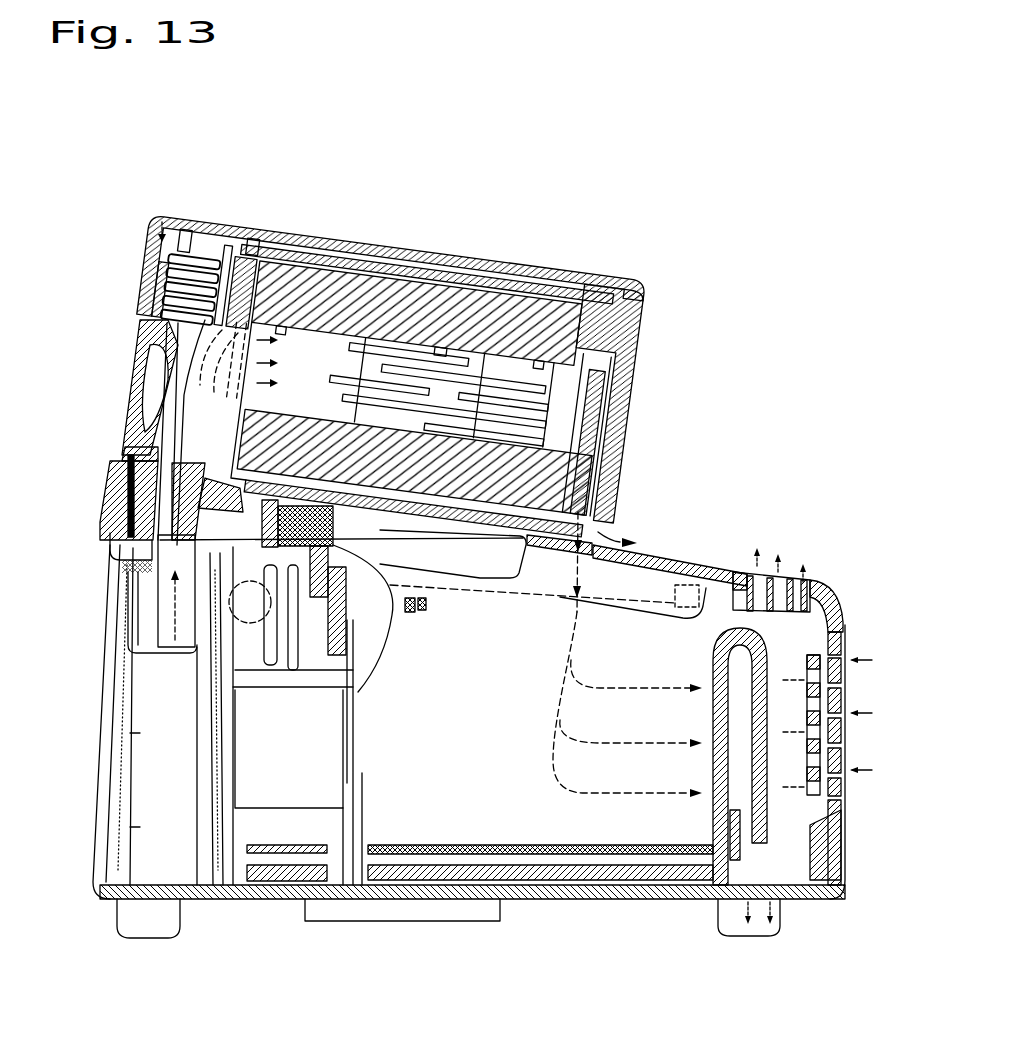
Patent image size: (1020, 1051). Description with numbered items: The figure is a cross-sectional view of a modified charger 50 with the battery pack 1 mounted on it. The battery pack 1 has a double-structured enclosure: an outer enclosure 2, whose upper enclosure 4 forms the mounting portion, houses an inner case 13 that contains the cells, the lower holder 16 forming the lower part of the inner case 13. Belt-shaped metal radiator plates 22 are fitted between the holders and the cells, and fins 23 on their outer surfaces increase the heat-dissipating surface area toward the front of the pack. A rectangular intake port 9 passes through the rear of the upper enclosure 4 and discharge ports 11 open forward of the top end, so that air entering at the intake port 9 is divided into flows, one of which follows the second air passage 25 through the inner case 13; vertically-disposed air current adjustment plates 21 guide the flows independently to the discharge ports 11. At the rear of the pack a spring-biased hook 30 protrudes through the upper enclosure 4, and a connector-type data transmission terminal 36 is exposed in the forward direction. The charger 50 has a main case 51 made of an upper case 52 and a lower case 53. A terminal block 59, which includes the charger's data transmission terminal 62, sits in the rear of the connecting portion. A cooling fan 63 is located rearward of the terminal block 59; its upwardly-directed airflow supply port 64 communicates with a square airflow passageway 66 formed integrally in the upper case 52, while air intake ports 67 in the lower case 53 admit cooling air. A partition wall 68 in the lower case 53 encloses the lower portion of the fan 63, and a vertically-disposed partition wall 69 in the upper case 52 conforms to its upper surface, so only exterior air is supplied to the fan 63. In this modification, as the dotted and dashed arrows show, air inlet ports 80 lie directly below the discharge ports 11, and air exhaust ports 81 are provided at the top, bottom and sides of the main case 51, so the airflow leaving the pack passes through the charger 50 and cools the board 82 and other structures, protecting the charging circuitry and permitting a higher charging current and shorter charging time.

The battery pack 1 is at (523, 216).
The outer enclosure 2 is at (583, 278).
The upper enclosure 4 is at (110, 522).
The intake port 9 is at (102, 473).
The discharge ports 11 is at (622, 518).
The inner case 13 is at (641, 327).
The lower holder 16 is at (382, 275).
The air current adjustment plates 21 is at (628, 405).
The radiator plates 22 is at (334, 335).
The fins 23 is at (420, 375).
The second air passage 25 is at (300, 345).
The hook 30 is at (160, 398).
The data transmission terminal 36 is at (147, 437).
The charger 50 is at (794, 544).
The main case 51 is at (832, 582).
The upper case 52 is at (677, 560).
The lower case 53 is at (626, 900).
The terminal block 59 is at (345, 588).
The data transmission terminal 62 is at (300, 538).
The cooling fan 63 is at (112, 743).
The airflow supply port 64 is at (165, 655).
The airflow passageway 66 is at (100, 590).
The air intake ports 67 is at (103, 894).
The partition wall 68 is at (218, 887).
The partition wall 69 is at (110, 630).
The air inlet ports 80 is at (585, 560).
The air exhaust ports 81 is at (747, 576).
The board 82 is at (472, 845).